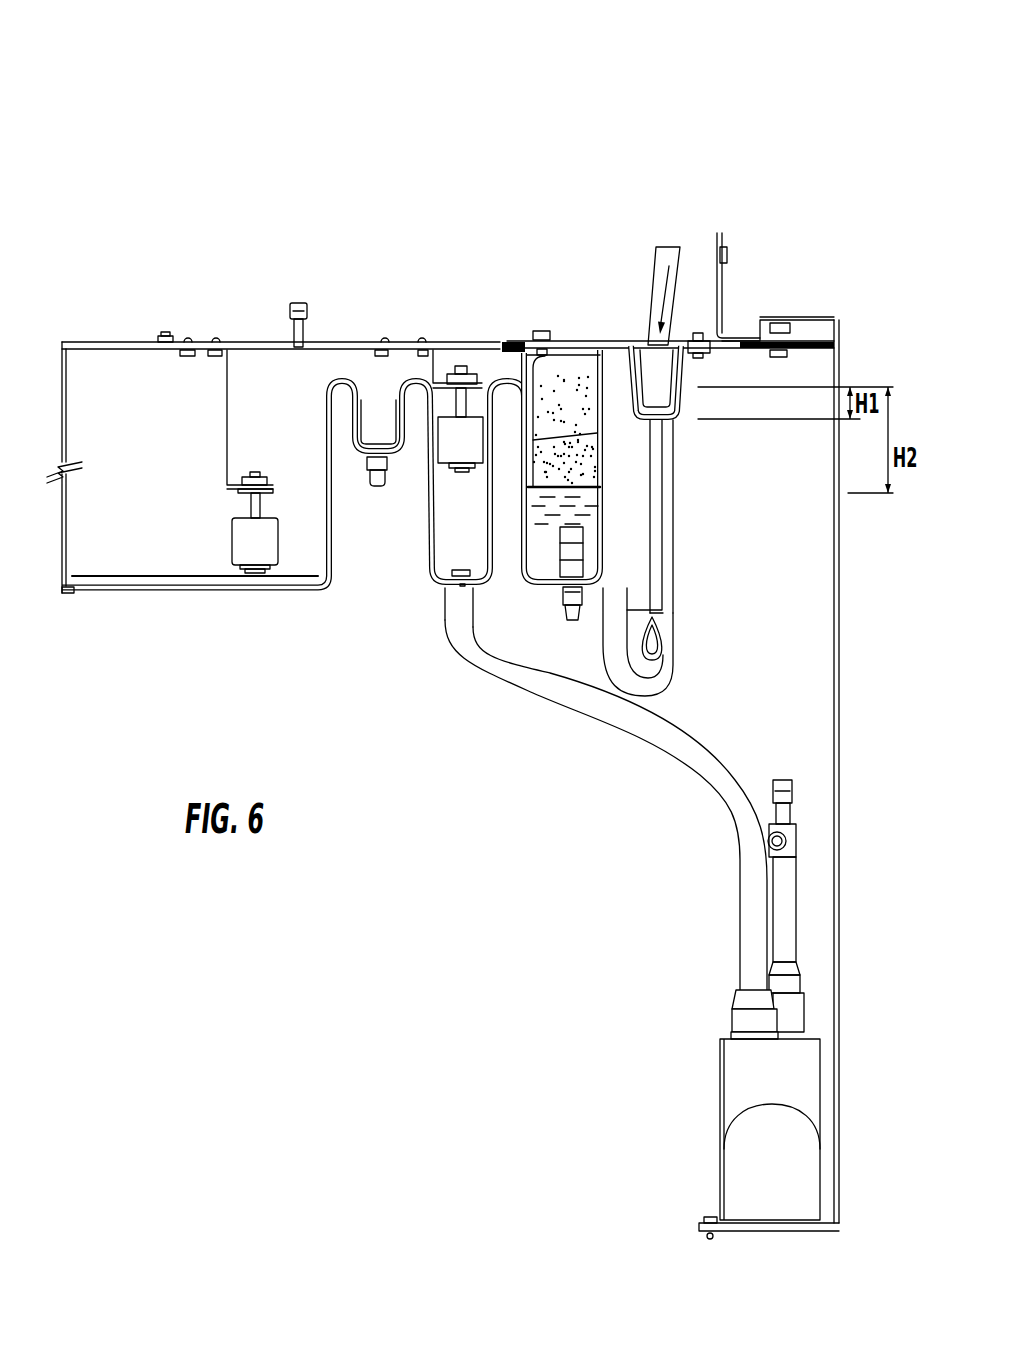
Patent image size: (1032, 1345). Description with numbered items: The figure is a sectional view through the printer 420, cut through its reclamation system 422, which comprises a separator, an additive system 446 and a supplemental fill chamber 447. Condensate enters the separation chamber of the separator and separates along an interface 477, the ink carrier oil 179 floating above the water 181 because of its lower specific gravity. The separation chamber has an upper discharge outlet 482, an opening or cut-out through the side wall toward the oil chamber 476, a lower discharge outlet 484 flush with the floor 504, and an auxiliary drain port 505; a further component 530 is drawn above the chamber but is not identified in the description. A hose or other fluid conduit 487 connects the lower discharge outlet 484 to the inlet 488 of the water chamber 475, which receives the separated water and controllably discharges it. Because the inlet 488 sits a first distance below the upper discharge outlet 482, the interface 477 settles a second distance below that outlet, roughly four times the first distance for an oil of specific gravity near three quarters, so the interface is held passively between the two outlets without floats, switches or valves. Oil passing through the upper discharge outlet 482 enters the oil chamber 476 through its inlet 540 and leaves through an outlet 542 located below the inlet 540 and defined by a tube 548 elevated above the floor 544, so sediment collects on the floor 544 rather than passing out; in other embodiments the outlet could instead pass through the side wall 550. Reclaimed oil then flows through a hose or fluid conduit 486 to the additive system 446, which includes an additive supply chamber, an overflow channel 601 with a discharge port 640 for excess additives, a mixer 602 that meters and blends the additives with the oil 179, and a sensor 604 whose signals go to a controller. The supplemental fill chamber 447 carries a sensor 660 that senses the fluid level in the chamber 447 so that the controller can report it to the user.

The printer 420 is at (312, 100).
The reclamation system 422 is at (445, 143).
The supplemental fill chamber 447 is at (128, 380).
The sensor 660 is at (237, 535).
The overflow channel 601 is at (370, 413).
The discharge port 640 is at (370, 478).
The sensor 604 is at (452, 437).
The inlet 540 is at (507, 385).
The upper discharge outlet 482 is at (513, 385).
The supply conduit 530 is at (663, 292).
The water chamber 475 is at (678, 376).
The inlet 488 is at (652, 419).
The ink carrier oil 179 is at (590, 450).
The water 181 is at (580, 502).
The floor 504 is at (604, 612).
The auxiliary drain port 505 is at (565, 600).
The side wall 550 is at (427, 492).
The tube 548 is at (467, 570).
The interface 477 is at (527, 472).
The oil chamber 476 is at (430, 568).
The outlet 542 is at (451, 590).
The floor 544 is at (433, 585).
The fluid conduit 487 is at (667, 643).
The lower discharge outlet 484 is at (633, 694).
The fluid conduit 486 is at (618, 737).
The additive system 446 is at (703, 1072).
The mixer 602 is at (720, 1101).